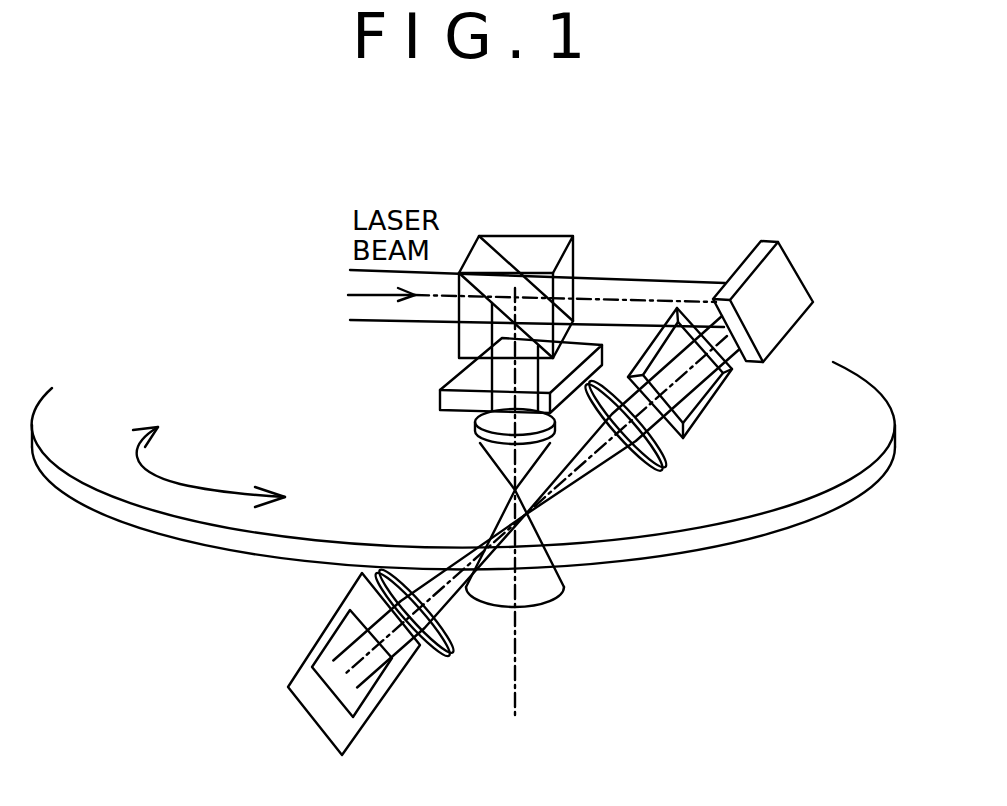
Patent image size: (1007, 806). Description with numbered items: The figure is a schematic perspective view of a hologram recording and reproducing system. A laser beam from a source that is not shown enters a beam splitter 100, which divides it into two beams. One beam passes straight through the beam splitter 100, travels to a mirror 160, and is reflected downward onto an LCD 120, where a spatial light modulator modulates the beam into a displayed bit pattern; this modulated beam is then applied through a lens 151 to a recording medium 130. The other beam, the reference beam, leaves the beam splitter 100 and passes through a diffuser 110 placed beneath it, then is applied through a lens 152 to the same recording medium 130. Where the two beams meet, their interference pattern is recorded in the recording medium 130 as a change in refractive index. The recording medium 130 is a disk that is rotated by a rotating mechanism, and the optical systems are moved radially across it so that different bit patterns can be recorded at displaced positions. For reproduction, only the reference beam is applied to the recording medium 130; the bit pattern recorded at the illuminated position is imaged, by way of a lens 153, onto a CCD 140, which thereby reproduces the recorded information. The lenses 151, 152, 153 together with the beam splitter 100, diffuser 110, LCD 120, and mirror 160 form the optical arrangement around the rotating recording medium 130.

The beam splitter 100 is at (517, 233).
The diffuser 110 is at (458, 378).
The LCD 120 is at (690, 429).
The recording medium 130 is at (88, 408).
The CCD 140 is at (304, 661).
The lens 151 is at (650, 470).
The lens 152 is at (490, 447).
The lens 153 is at (447, 656).
The mirror 160 is at (797, 268).